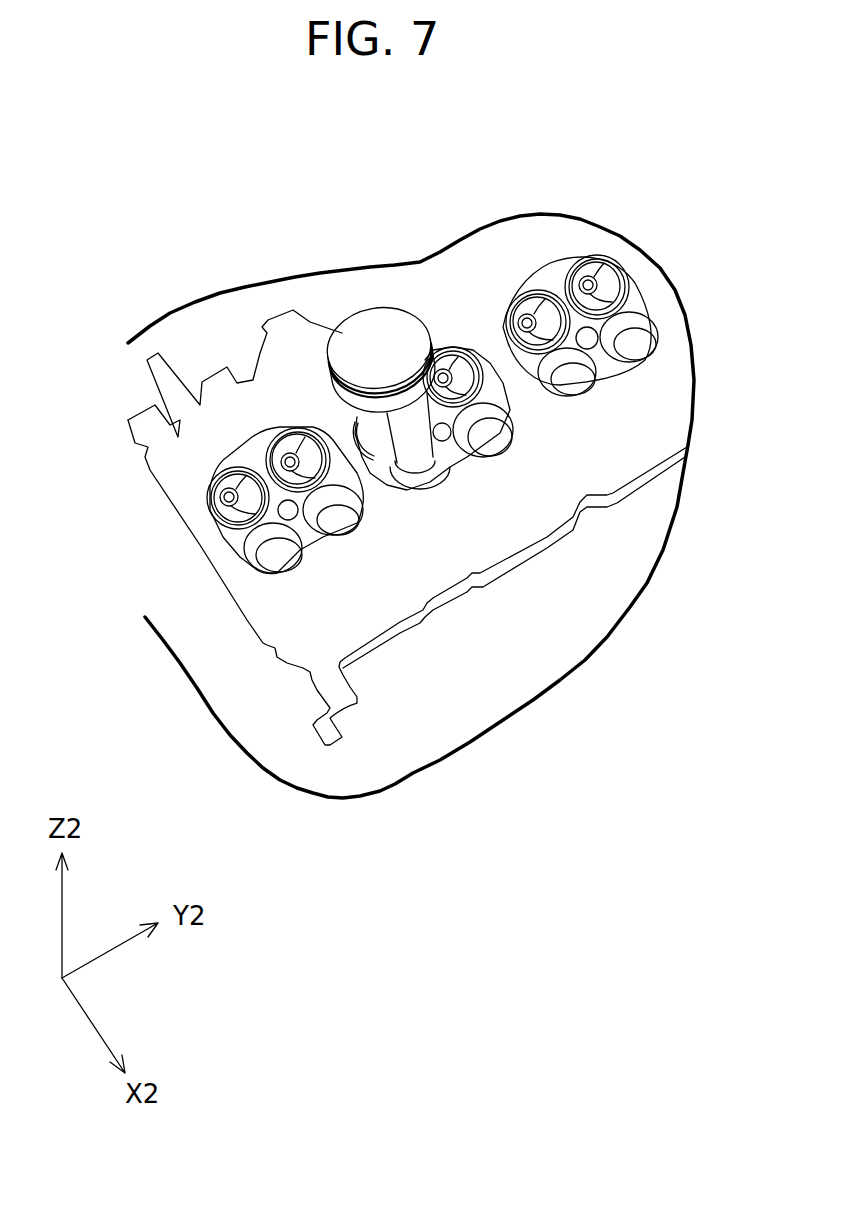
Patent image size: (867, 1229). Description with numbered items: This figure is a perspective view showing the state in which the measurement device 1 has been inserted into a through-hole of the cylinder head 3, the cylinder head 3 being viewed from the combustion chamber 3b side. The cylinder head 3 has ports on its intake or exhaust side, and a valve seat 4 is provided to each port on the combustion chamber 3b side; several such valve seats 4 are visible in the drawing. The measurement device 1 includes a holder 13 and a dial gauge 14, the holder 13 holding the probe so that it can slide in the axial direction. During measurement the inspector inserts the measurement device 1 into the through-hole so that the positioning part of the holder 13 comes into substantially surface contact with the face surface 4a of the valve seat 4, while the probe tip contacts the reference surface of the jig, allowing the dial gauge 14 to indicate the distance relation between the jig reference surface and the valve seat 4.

The measurement device 1 is at (340, 301).
The cylinder head 3 is at (522, 250).
The combustion chamber 3b is at (555, 280).
The valve seat 4 is at (247, 391).
The face surface 4a is at (248, 453).
The holder 13 is at (447, 377).
The dial gauge 14 is at (378, 323).